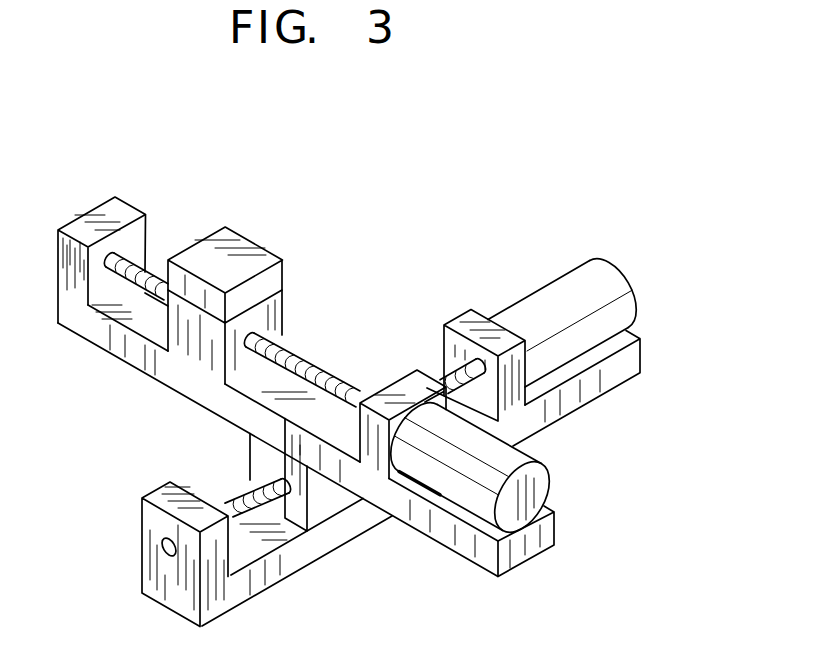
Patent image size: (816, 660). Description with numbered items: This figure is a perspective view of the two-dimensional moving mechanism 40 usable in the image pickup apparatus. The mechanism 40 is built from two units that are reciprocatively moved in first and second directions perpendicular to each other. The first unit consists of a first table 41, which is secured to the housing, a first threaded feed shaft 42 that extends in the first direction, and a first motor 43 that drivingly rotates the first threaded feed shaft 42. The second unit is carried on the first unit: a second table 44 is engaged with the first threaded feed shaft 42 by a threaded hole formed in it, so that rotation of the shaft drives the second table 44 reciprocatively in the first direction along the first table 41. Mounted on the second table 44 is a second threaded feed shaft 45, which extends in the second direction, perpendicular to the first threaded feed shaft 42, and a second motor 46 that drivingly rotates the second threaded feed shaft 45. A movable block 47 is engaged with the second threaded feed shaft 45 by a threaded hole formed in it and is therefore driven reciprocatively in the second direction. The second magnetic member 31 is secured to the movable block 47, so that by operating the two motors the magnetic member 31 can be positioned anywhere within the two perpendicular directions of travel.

The second magnetic member 31 is at (233, 247).
The two-dimensional moving mechanism 40 is at (359, 381).
The first table 41 is at (597, 383).
The first threaded feed shaft 42 is at (250, 510).
The first motor 43 is at (600, 311).
The second table 44 is at (468, 543).
The second threaded feed shaft 45 is at (139, 281).
The second motor 46 is at (450, 465).
The movable block 47 is at (200, 337).